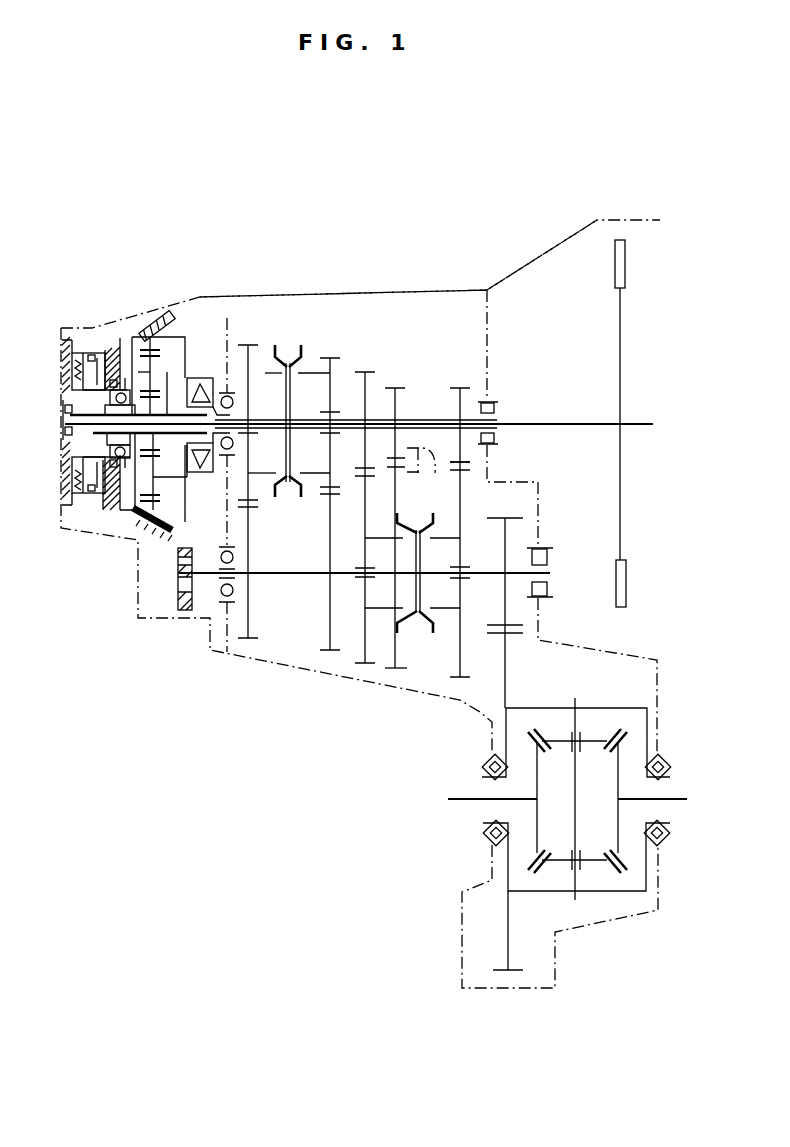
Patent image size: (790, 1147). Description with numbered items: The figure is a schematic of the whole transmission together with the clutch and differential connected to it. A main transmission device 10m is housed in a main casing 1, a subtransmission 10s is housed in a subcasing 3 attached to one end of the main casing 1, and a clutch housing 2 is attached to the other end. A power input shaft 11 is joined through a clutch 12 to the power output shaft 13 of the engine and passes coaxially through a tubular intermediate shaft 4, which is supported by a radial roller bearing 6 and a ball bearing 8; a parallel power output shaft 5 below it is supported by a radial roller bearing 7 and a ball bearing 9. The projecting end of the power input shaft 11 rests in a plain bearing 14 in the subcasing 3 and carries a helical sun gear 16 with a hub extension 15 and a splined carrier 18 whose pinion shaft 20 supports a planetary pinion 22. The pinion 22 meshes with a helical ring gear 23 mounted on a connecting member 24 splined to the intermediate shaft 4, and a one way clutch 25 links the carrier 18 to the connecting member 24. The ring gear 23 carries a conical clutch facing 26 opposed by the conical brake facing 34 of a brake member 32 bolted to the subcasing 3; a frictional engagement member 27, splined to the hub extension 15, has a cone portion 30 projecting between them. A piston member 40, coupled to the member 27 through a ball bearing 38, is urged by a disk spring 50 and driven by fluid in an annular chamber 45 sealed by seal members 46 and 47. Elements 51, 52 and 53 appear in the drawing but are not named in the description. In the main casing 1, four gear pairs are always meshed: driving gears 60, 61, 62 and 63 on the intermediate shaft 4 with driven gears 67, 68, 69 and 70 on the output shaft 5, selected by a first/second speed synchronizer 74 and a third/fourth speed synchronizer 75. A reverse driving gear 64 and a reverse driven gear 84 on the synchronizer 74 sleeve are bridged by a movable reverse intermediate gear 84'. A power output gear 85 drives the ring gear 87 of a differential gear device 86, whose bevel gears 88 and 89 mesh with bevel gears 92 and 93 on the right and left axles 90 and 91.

The main casing 1 is at (383, 292).
The clutch housing 2 is at (526, 265).
The subcasing 3 is at (186, 305).
The tubular intermediate shaft 4 is at (438, 418).
The power output shaft 5 is at (272, 576).
The radial roller bearing 6 is at (498, 407).
The radial roller bearing 7 is at (548, 563).
The ball bearing 8 is at (229, 395).
The ball bearing 9 is at (222, 553).
The main transmission device 10m is at (408, 325).
The subtransmission 10s is at (148, 530).
The power input shaft 11 is at (555, 420).
The clutch 12 is at (615, 296).
The power output shaft of engine 13 is at (636, 420).
The plain bearing 14 is at (64, 430).
The hub extension 15 is at (112, 429).
The helical sun gear 16 is at (187, 470).
The carrier 18 is at (201, 384).
The pinion shaft 20 is at (168, 378).
The planetary pinion 22 is at (170, 370).
The helical ring gear 23 is at (143, 347).
The connecting member 24 is at (248, 346).
The one way clutch 25 is at (249, 417).
The conical clutch facing 26 is at (185, 337).
The frictional engagement member 27 is at (132, 345).
The cone portion 30 is at (153, 345).
The brake member 32 is at (105, 345).
The conical brake facing 34 is at (152, 318).
The ball bearing 38 is at (98, 493).
The piston member 40 is at (72, 390).
The annular chamber 45 is at (84, 373).
The seal member 46 is at (75, 350).
The seal member 47 is at (111, 496).
The disk spring 50 is at (72, 478).
The gear 51 is at (176, 608).
The gear 52 is at (178, 578).
The shaft 53 is at (188, 610).
The first speed driving helical gear 60 is at (460, 402).
The second speed driving helical gear 61 is at (366, 402).
The third speed driving helical gear 62 is at (331, 385).
The fourth speed driving helical gear 63 is at (248, 360).
The reverse driving gear 64 is at (396, 400).
The first speed driven helical gear 67 is at (463, 508).
The second speed driven helical gear wheel 68 is at (365, 520).
The third speed driven helical gear wheel 69 is at (330, 545).
The fourth speed driven helical gear wheel 70 is at (250, 527).
The first/second speed synchronizer 74 is at (423, 642).
The third/fourth speed synchronizer 75 is at (311, 354).
The reverse driven gear 84 is at (394, 695).
The reverse intermediate gear 84' is at (433, 478).
The power output gear 85 is at (503, 525).
The differential gear device 86 is at (579, 692).
The ring gear 87 is at (505, 666).
The bevel gear 88 is at (600, 740).
The bevel gear 89 is at (592, 861).
The right axle 90 is at (470, 800).
The left axle 91 is at (660, 836).
The bevel gear 92 is at (537, 832).
The bevel gear 93 is at (620, 842).